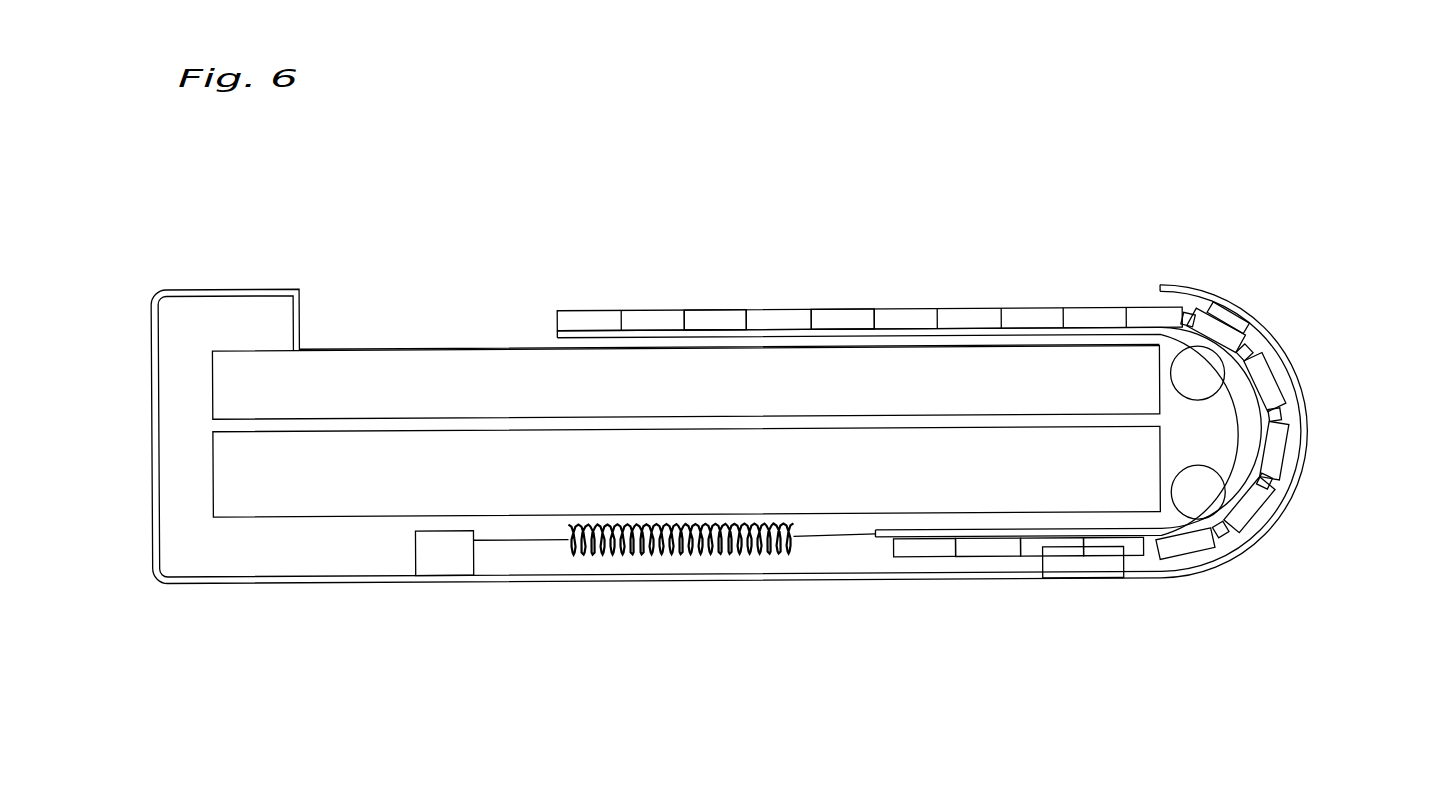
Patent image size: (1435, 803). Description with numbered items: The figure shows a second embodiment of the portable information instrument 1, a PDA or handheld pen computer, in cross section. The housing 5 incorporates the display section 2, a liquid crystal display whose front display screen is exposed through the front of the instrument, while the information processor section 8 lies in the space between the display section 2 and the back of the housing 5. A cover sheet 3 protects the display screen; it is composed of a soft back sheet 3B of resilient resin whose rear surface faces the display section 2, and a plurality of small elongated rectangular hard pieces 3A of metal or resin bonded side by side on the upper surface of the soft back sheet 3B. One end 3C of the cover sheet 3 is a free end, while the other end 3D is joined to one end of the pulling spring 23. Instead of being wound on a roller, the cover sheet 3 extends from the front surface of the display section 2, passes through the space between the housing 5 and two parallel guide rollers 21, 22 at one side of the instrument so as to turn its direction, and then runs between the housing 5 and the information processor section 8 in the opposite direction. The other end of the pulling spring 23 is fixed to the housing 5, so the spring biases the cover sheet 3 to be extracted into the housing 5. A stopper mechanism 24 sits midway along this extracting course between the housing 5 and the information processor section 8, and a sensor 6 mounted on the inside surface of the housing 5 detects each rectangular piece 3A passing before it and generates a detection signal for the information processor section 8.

The portable information instrument 1 is at (226, 262).
The display section 2 is at (398, 357).
The cover sheet 3 is at (905, 299).
The small elongated rectangular hard pieces 3A is at (710, 320).
The soft back sheet 3B is at (837, 320).
The one end of the cover sheet 3C is at (558, 334).
The other end of the cover sheet 3D is at (875, 539).
The housing 5 is at (221, 592).
The sensor 6 is at (1229, 320).
The information processor section 8 is at (398, 499).
The guide roller 21 is at (1205, 375).
The guide roller 22 is at (1207, 503).
The pulling spring 23 is at (613, 551).
The stopper mechanism 24 is at (1086, 568).